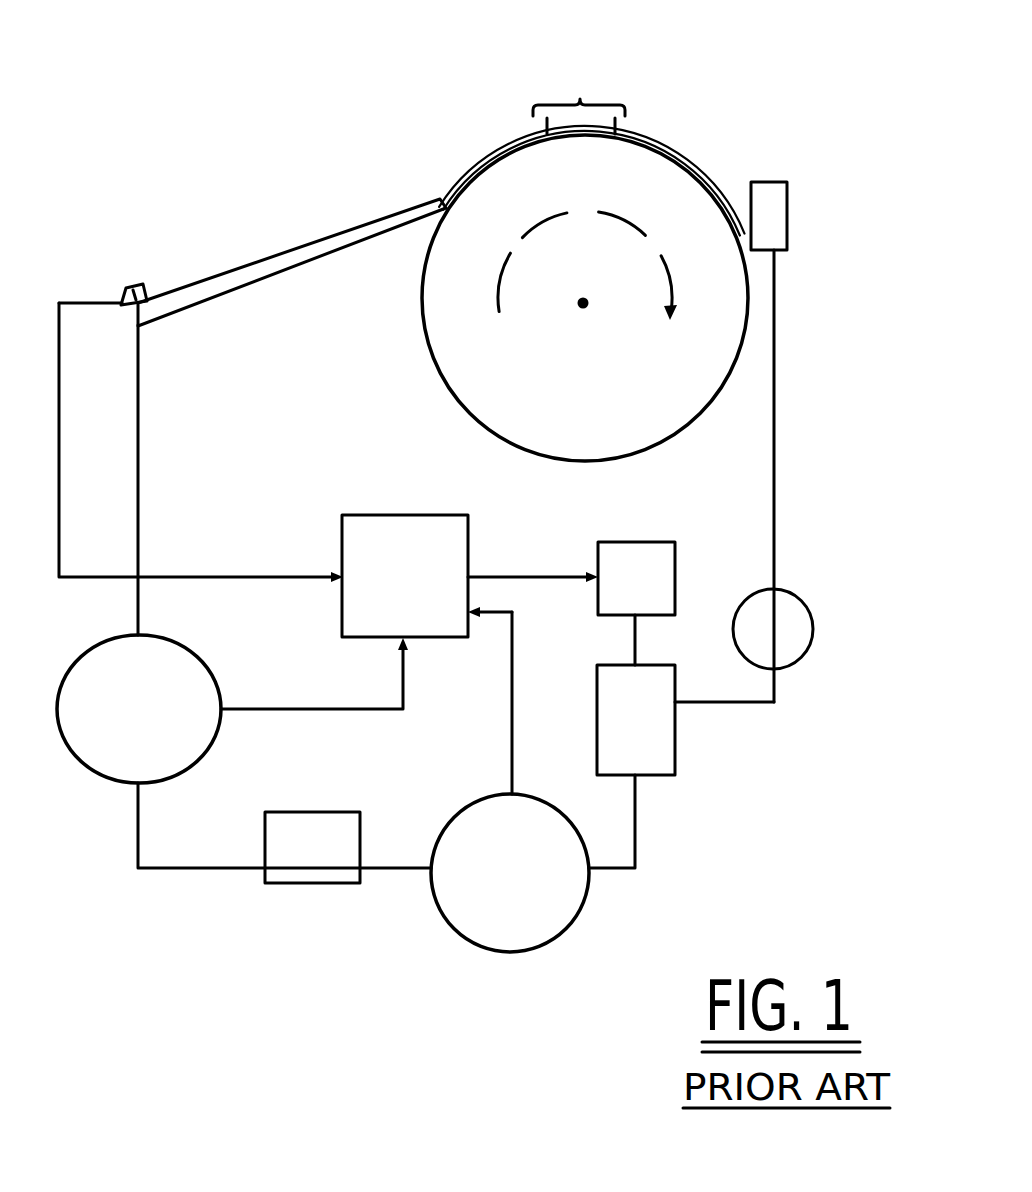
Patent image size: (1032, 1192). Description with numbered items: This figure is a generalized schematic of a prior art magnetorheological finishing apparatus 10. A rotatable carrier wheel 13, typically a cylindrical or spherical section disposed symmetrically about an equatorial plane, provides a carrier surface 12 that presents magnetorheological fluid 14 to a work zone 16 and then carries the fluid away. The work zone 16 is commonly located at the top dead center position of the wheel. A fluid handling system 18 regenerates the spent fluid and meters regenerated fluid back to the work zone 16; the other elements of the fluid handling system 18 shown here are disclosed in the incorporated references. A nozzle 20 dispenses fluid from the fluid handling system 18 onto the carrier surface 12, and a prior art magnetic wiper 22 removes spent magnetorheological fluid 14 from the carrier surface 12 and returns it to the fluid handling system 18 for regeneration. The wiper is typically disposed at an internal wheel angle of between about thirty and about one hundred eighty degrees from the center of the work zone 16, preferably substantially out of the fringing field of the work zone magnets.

The magnetorheological finishing apparatus 10 is at (846, 96).
The carrier surface 12 is at (422, 318).
The carrier wheel 13 is at (604, 406).
The magnetorheological fluid 14 is at (499, 158).
The work zone 16 is at (579, 93).
The fluid handling system 18 is at (787, 764).
The nozzle 20 is at (422, 204).
The magnetic wiper 22 is at (739, 182).